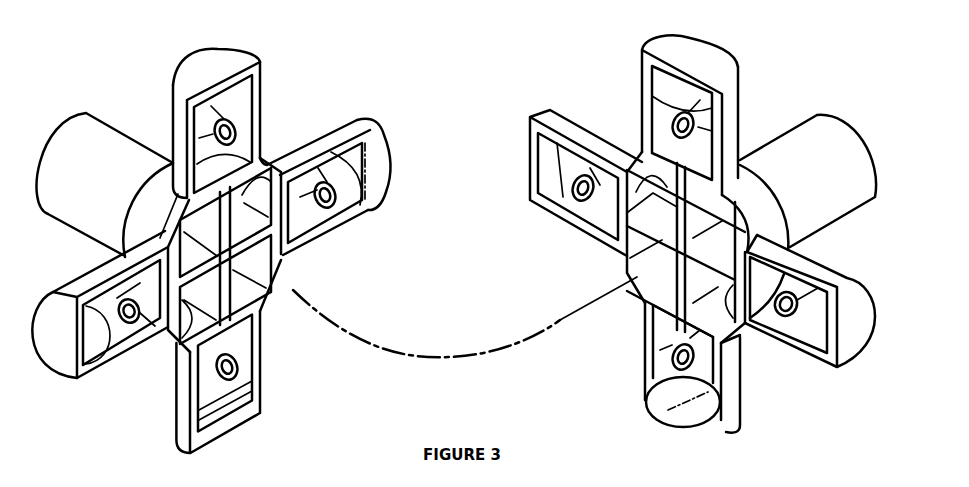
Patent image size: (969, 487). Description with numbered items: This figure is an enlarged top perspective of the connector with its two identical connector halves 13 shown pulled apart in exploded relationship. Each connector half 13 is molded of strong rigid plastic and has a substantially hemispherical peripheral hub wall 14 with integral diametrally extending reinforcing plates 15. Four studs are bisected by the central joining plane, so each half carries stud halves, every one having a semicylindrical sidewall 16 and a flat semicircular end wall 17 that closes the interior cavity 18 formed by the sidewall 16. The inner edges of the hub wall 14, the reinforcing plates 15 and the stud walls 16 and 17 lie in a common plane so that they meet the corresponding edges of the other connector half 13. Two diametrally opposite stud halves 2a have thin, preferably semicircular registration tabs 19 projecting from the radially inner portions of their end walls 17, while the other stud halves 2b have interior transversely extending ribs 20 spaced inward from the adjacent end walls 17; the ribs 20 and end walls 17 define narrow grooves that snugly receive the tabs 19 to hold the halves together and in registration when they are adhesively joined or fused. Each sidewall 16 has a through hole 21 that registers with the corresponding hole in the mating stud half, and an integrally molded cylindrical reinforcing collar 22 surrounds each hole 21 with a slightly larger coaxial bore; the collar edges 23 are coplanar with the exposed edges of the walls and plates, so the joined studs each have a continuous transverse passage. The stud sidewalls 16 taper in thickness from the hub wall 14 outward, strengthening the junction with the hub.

The stud halves 2a is at (375, 118).
The stud halves 2b is at (262, 78).
The through hole 21 is at (89, 152).
The connector half 13 is at (167, 110).
The hub wall 14 is at (272, 290).
The reinforcing plates 15 is at (227, 297).
The semicylindrical sidewall 16 is at (261, 128).
The end wall 17 is at (217, 65).
The interior cavity 18 is at (130, 332).
The registration tabs 19 is at (385, 172).
The ribs 20 is at (213, 392).
The reinforcing collar 22 is at (315, 203).
The collar edges 23 is at (333, 201).